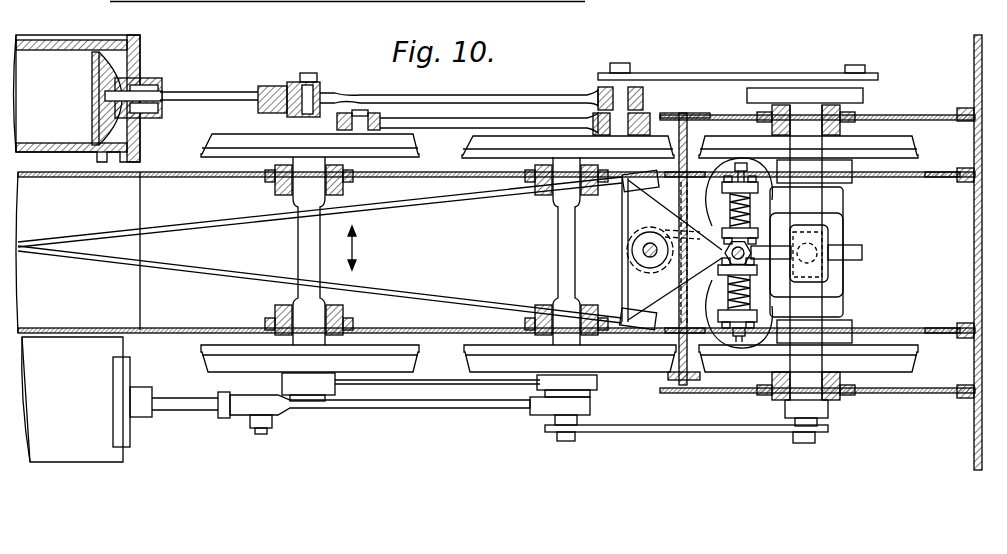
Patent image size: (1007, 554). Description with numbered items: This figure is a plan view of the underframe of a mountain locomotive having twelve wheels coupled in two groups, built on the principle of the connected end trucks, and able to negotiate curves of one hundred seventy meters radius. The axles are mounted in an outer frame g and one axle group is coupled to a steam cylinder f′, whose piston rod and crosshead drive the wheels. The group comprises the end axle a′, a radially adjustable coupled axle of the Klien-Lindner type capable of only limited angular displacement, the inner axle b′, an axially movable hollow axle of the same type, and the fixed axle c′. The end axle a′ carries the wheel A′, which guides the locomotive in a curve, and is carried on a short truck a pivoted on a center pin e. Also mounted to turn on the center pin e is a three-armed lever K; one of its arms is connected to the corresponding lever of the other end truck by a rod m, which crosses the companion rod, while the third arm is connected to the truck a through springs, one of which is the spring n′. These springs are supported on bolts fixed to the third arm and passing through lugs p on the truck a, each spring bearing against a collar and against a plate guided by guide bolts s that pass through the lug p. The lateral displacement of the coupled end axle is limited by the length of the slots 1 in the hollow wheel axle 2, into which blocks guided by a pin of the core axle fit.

The steam cylinder f′ is at (88, 98).
The end axle a′ is at (807, 120).
The outer frame g is at (932, 116).
The rod m is at (419, 210).
The lower truss rod l′ is at (220, 276).
The inner axle b′ is at (300, 248).
The fixed axle c′ is at (565, 257).
The center pin e is at (642, 243).
The truck a is at (650, 238).
The three-armed lever K is at (642, 288).
The guide bolt s is at (725, 205).
The spring n′ is at (723, 178).
The lug p is at (758, 190).
The hollow wheel axle 2 is at (845, 220).
The slot 1 is at (828, 277).
The wheel A′ is at (893, 145).